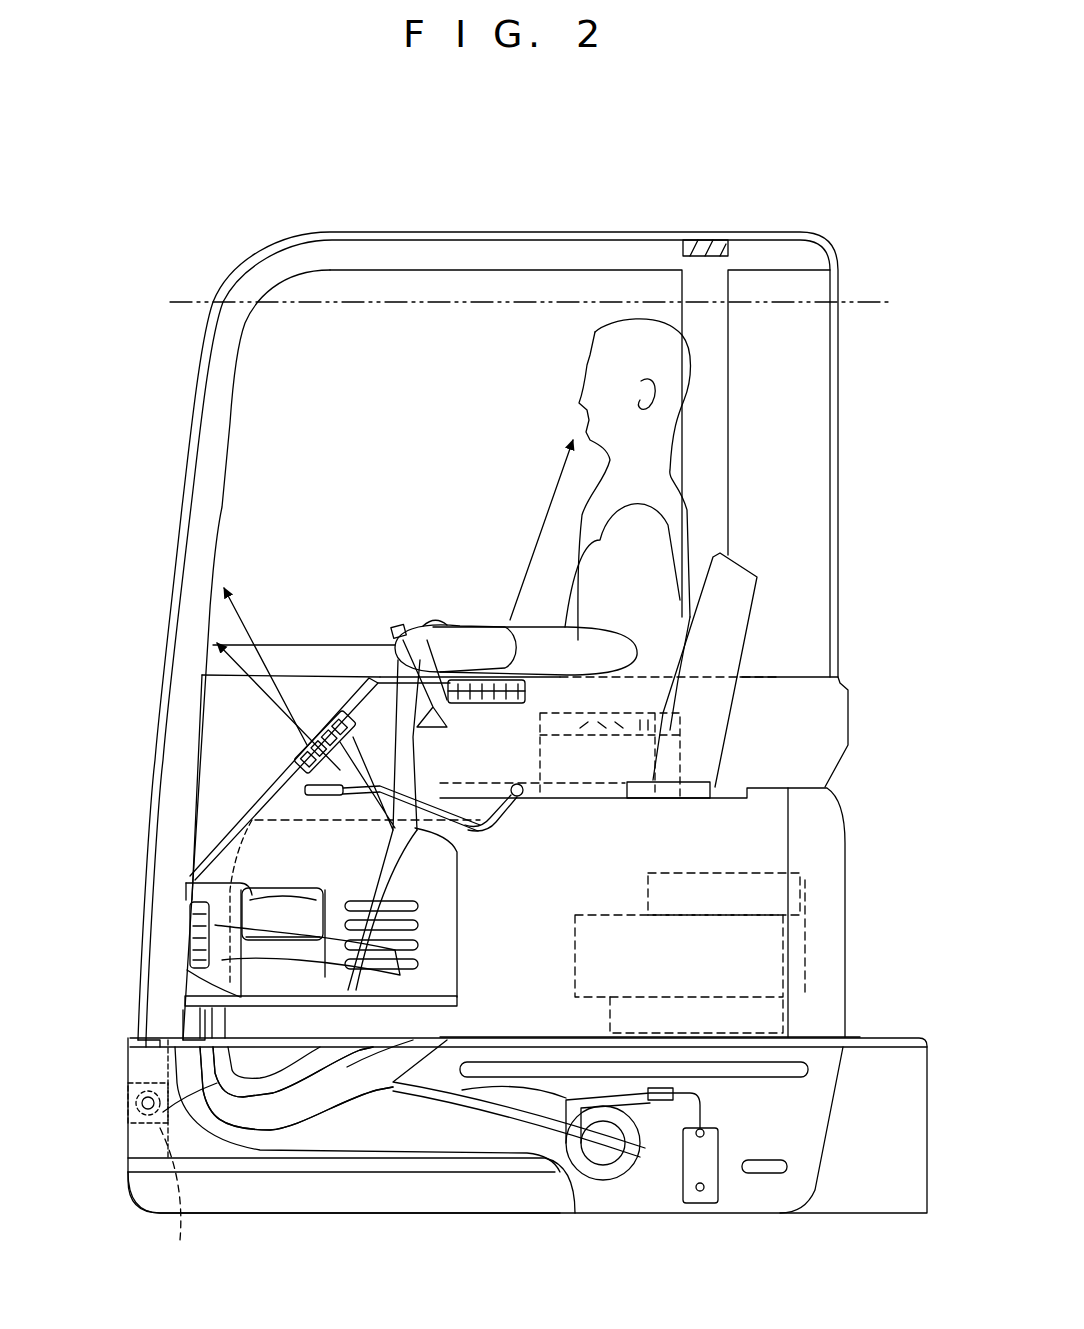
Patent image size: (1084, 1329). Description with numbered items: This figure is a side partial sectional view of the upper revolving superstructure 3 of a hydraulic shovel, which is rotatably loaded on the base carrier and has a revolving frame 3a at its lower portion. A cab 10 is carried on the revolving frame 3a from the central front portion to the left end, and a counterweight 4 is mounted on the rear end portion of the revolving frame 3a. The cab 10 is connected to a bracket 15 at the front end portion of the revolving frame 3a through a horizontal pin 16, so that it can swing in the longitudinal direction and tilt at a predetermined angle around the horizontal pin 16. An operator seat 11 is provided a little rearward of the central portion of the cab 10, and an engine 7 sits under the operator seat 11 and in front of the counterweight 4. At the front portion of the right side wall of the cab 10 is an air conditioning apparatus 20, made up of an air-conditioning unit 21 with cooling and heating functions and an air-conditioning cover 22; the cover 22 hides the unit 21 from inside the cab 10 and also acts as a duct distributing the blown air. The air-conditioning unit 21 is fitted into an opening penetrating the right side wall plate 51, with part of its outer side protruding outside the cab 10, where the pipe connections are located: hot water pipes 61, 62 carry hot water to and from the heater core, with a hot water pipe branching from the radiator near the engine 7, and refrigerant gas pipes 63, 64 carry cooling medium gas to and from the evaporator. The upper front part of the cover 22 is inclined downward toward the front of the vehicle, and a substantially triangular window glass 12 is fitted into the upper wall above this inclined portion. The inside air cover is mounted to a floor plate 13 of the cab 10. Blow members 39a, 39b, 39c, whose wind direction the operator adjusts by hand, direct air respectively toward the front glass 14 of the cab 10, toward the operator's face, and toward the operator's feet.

The upper revolving superstructure 3 is at (181, 290).
The revolving frame 3a is at (160, 1192).
The counterweight 4 is at (893, 1078).
The engine 7 is at (805, 905).
The cab 10 is at (568, 228).
The operator seat 11 is at (728, 622).
The window glass 12 is at (237, 707).
The floor plate 13 is at (240, 1000).
The front glass 14 is at (180, 470).
The bracket 15 is at (191, 1174).
The horizontal pin 16 is at (163, 1112).
The air conditioning apparatus 20 is at (215, 838).
The air-conditioning unit 21 is at (200, 880).
The air-conditioning cover 22 is at (285, 793).
The blow member 39a is at (300, 752).
The blow member 39b is at (465, 680).
The blow member 39c is at (190, 933).
The right side wall plate 51 is at (810, 715).
The hot water pipe 61 is at (208, 1025).
The hot water pipe 62 is at (296, 1088).
The refrigerant gas pipe 63 is at (293, 1072).
The refrigerant gas pipe 64 is at (183, 1020).